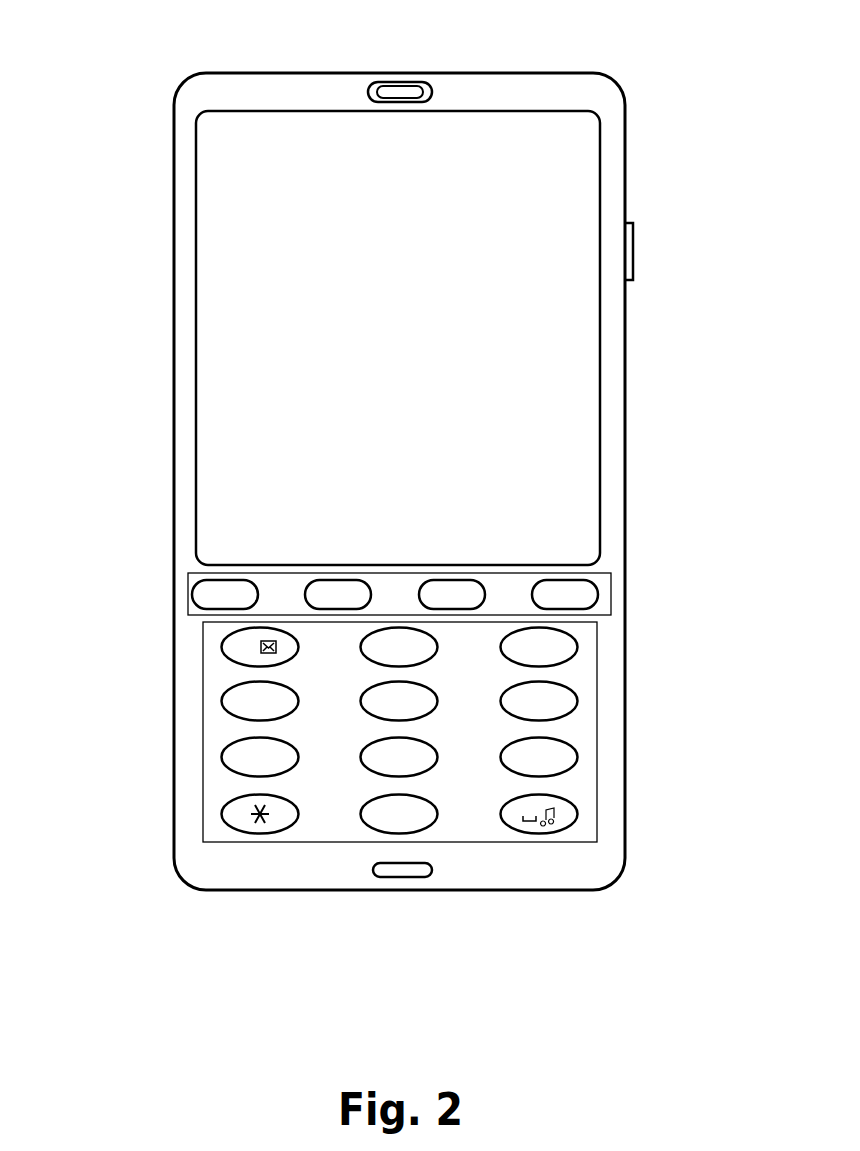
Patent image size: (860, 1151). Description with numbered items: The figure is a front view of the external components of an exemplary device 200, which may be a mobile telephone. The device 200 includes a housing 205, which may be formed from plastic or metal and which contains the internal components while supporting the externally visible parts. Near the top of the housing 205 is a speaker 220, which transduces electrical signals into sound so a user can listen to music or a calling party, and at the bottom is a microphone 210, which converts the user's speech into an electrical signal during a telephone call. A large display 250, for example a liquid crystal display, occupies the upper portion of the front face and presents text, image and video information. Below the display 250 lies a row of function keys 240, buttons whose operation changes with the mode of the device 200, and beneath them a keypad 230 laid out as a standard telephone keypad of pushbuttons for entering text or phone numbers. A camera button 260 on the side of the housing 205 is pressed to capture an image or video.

The device 200 is at (184, 41).
The housing 205 is at (174, 420).
The microphone 210 is at (420, 877).
The speaker 220 is at (412, 82).
The keypad 230 is at (637, 830).
The function keys 240 is at (637, 575).
The display 250 is at (583, 354).
The camera button 260 is at (628, 252).